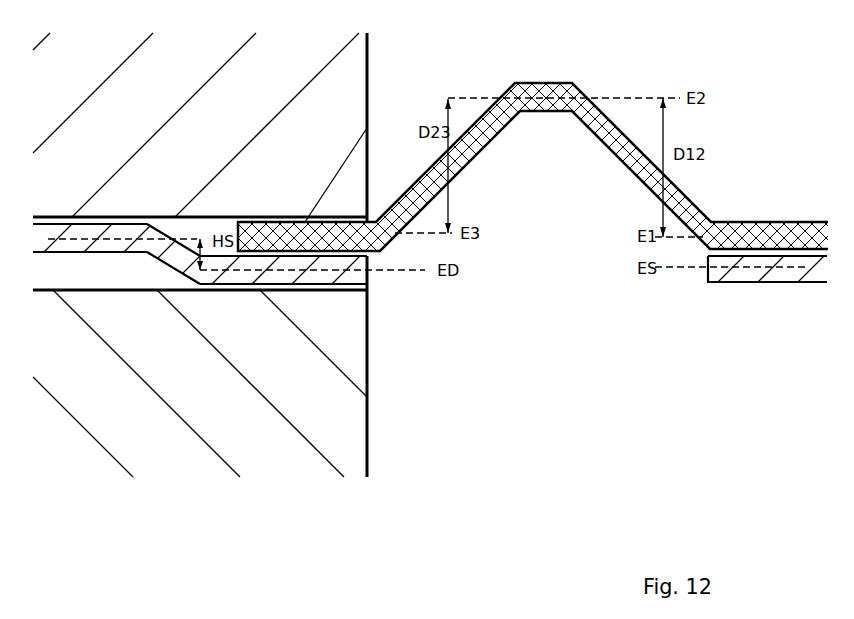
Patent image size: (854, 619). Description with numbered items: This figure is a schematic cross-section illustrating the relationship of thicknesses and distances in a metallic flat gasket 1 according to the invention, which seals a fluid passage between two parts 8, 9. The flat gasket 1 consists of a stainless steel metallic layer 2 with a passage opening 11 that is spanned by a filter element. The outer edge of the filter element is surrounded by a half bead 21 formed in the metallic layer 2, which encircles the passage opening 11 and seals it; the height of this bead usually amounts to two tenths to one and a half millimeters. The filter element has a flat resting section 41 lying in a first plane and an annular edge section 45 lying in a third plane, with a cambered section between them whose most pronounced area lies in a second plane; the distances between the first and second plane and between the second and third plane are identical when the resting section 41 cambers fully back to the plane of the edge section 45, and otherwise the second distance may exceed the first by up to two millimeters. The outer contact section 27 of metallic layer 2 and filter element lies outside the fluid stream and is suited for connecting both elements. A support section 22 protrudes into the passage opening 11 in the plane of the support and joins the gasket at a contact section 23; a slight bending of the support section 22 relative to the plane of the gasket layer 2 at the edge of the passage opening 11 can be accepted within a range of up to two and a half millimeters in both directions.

The flat gasket 1 is at (79, 267).
The metallic layer 2 is at (127, 237).
The part 8 is at (192, 77).
The part 9 is at (224, 429).
The passage opening 11 is at (555, 288).
The half bead 21 is at (183, 257).
The support section 22 is at (788, 268).
The contact section 23 is at (745, 255).
The outer contact section 27 is at (277, 222).
The resting section 41 is at (762, 223).
The edge section 45 is at (340, 222).